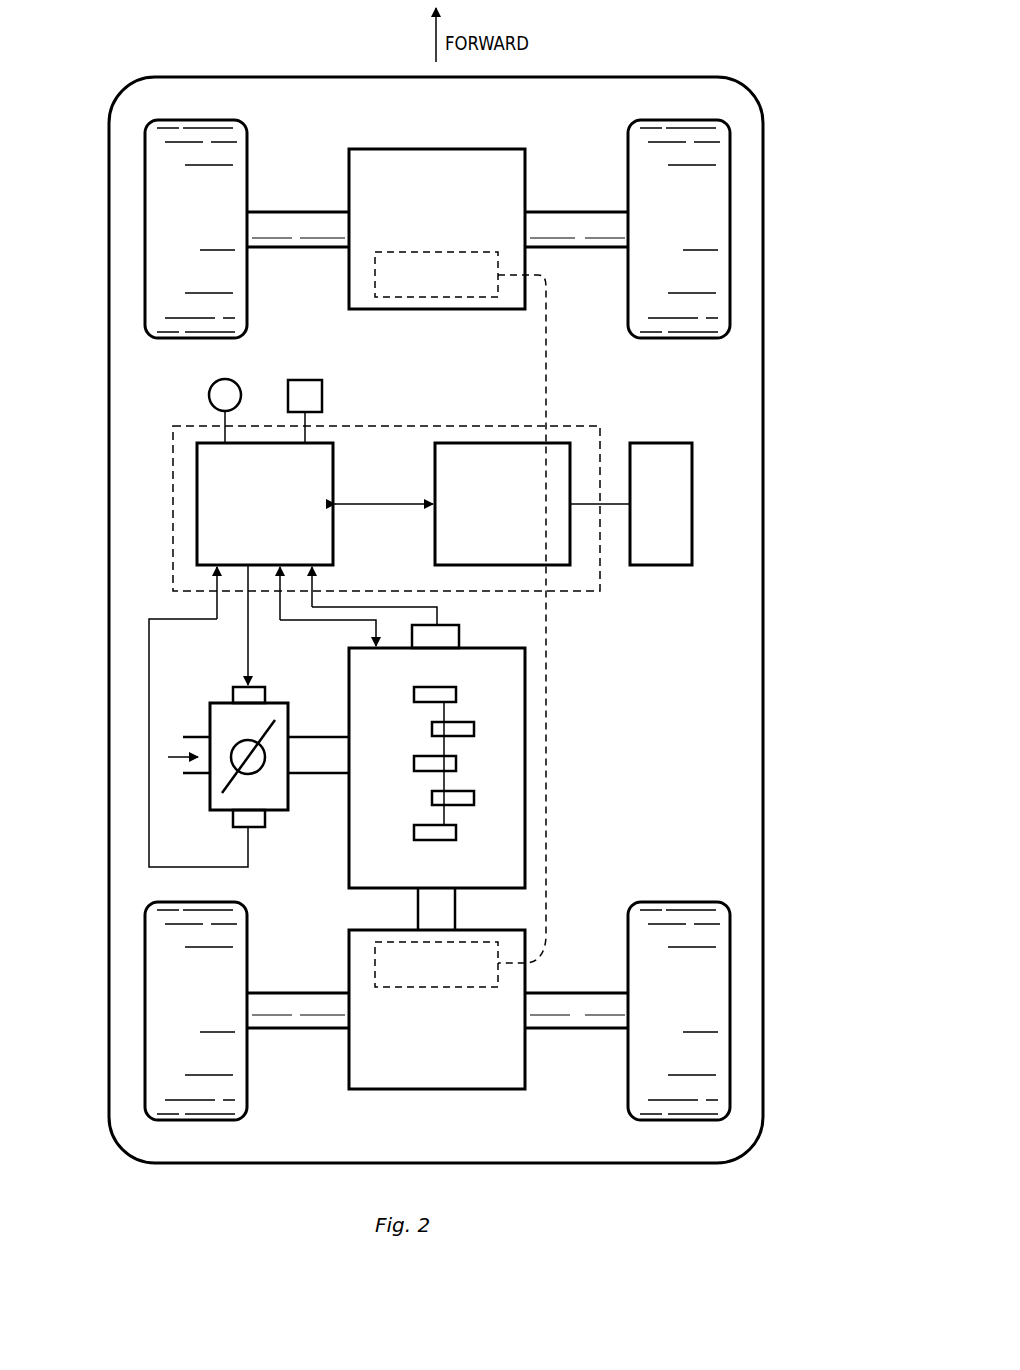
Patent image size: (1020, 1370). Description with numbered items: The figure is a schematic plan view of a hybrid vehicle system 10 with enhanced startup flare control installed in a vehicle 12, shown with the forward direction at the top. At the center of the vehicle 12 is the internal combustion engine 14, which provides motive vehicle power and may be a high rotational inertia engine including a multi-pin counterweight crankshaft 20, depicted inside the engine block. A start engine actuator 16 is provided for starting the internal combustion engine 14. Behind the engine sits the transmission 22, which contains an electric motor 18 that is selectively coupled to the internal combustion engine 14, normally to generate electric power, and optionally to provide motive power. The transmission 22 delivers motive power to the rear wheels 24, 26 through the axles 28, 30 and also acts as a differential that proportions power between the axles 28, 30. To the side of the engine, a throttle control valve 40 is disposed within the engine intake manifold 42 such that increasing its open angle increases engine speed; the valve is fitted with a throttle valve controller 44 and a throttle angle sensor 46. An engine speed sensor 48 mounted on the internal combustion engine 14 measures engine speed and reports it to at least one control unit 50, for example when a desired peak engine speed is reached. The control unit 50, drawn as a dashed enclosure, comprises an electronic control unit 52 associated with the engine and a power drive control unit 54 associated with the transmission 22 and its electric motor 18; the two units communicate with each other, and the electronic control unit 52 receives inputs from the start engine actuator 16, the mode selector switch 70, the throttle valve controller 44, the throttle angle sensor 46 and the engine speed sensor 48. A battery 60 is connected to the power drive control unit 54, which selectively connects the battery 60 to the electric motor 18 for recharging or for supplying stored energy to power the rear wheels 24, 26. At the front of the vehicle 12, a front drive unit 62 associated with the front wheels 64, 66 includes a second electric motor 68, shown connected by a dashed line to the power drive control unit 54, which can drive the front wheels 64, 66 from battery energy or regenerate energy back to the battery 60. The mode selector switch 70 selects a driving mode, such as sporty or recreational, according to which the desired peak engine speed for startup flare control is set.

The hybrid vehicle system 10 is at (205, 1185).
The vehicle 12 is at (763, 643).
The internal combustion engine 14 is at (525, 755).
The start engine actuator 16 is at (210, 393).
The electric motor 18 is at (437, 968).
The multi-pin counterweight crankshaft 20 is at (428, 765).
The transmission 22 is at (440, 1089).
The rear wheel 24 is at (247, 1058).
The rear wheel 26 is at (665, 902).
The axle 28 is at (300, 1003).
The axle 30 is at (580, 1013).
The throttle control valve 40 is at (288, 793).
The engine intake manifold 42 is at (305, 750).
The throttle valve controller 44 is at (233, 697).
The throttle angle sensor 46 is at (240, 815).
The engine speed sensor 48 is at (459, 640).
The control unit 50 is at (430, 426).
The electronic control unit (ECU) 52 is at (333, 480).
The power drive control unit (PDU) 54 is at (435, 520).
The battery 60 is at (665, 443).
The front drive unit 62 is at (420, 149).
The front wheel 64 is at (247, 183).
The front wheel 66 is at (628, 172).
The electric motor 68 is at (428, 278).
The mode selector switch 70 is at (322, 398).